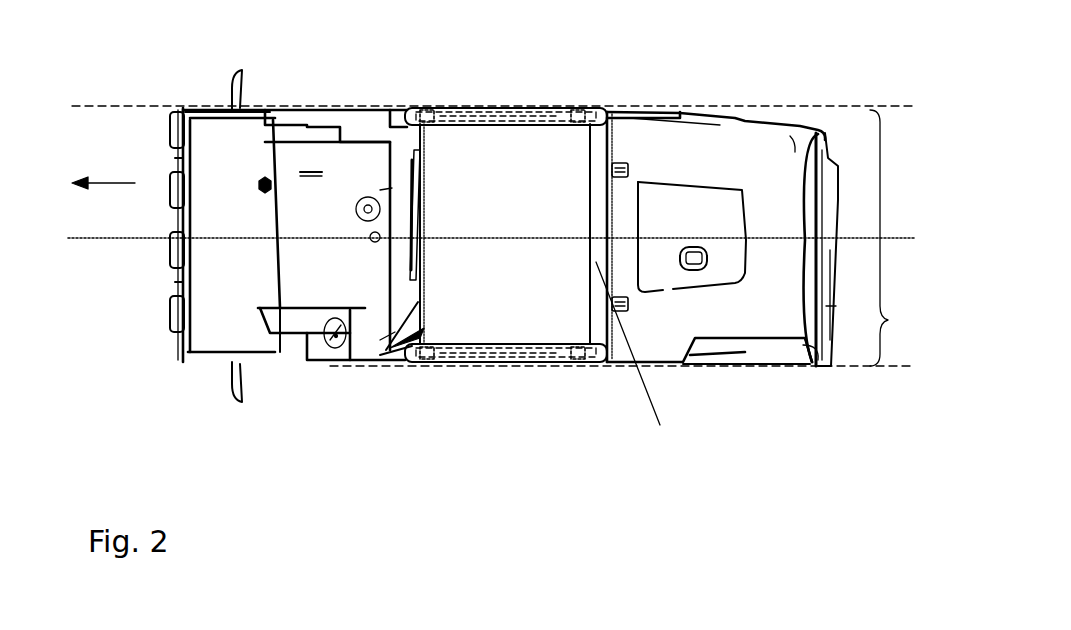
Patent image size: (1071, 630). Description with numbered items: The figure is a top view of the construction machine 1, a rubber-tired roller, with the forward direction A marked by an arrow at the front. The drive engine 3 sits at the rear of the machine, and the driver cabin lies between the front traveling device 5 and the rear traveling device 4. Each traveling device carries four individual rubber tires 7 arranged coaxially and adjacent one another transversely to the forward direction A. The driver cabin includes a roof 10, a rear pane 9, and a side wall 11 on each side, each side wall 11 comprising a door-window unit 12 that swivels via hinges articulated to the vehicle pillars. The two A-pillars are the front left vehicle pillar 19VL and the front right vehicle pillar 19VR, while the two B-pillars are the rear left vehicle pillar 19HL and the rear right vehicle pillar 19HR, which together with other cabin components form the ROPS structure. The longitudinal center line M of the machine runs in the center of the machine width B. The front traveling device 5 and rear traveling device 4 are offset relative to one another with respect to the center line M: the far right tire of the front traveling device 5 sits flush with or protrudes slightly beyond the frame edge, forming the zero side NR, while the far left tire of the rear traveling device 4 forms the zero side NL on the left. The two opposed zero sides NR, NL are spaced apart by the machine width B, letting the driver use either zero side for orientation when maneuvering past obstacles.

The construction machine 1 is at (658, 94).
The drive engine 3 is at (692, 212).
The rear traveling device 4 is at (790, 350).
The front traveling device 5 is at (295, 118).
The rubber tire 7 is at (170, 137).
The rear pane 9 is at (634, 356).
The roof 10 is at (510, 168).
The side wall 11 is at (522, 108).
The door-window unit 12 is at (552, 110).
The front right vehicle pillar 19VR is at (428, 115).
The front left vehicle pillar 19VL is at (422, 353).
The rear right vehicle pillar 19HR is at (586, 112).
The rear left vehicle pillar 19HL is at (575, 355).
The zero side NR is at (222, 105).
The zero side NL is at (727, 370).
The forward direction A is at (85, 183).
The longitudinal center line of the machine M is at (505, 239).
The machine width B is at (887, 238).